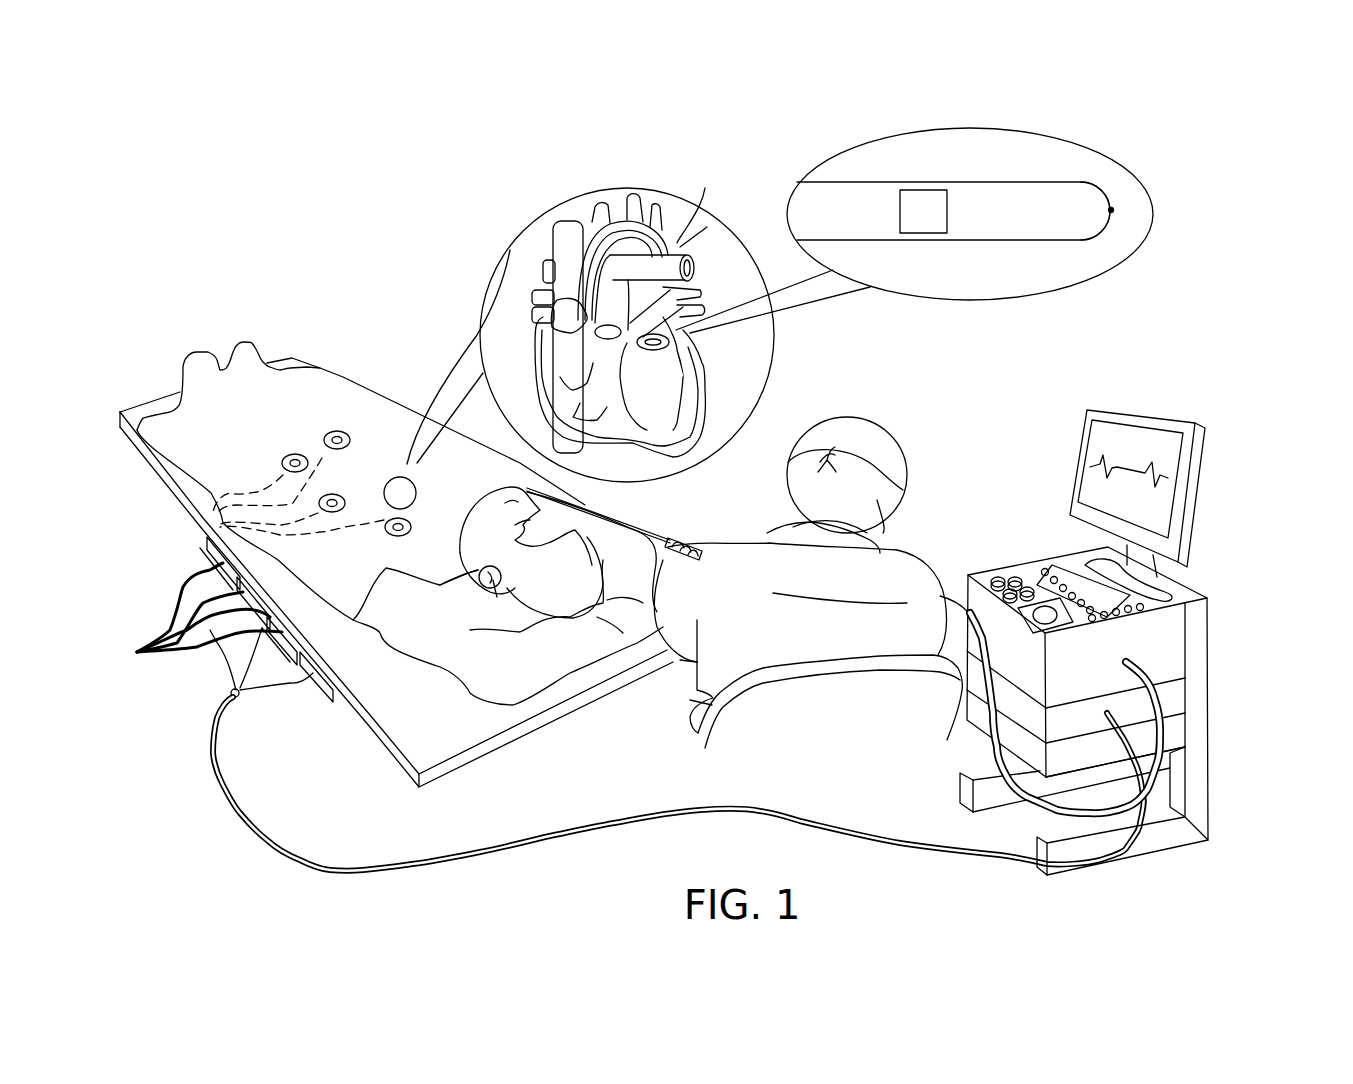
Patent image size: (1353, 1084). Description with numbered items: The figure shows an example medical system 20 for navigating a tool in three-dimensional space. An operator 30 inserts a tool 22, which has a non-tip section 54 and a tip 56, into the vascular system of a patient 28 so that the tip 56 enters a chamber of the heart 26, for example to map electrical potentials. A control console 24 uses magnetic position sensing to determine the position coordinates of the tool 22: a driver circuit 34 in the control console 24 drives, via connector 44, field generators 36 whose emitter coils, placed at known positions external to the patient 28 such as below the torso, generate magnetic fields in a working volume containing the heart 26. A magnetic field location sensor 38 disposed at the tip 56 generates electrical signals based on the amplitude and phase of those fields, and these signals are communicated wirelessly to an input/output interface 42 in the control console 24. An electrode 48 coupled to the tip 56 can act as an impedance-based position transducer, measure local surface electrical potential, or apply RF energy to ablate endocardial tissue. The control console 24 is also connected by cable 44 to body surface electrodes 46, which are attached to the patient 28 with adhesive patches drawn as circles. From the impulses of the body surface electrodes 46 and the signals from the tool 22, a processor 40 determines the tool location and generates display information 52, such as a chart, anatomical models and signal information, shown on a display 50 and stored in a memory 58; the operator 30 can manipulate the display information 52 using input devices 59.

The medical system 20 is at (1075, 356).
The tool 22 is at (620, 516).
The control console 24 is at (1124, 684).
The heart 26 is at (697, 407).
The patient 28 is at (540, 603).
The operator 30 is at (907, 560).
The driver circuit 34 is at (1164, 630).
The field generators 36 is at (205, 630).
The magnetic field location sensor 38 is at (923, 190).
The processor 40 is at (1172, 698).
The input/output interface 42 is at (1126, 662).
The cable 44 is at (542, 846).
The body surface electrodes 46 is at (288, 457).
The electrode 48 is at (1112, 210).
The display 50 is at (1189, 476).
The display information 52 is at (1143, 444).
The non-tip section 54 is at (660, 533).
The tip 56 is at (657, 333).
The memory 58 is at (1176, 733).
The input devices 59 is at (1014, 578).